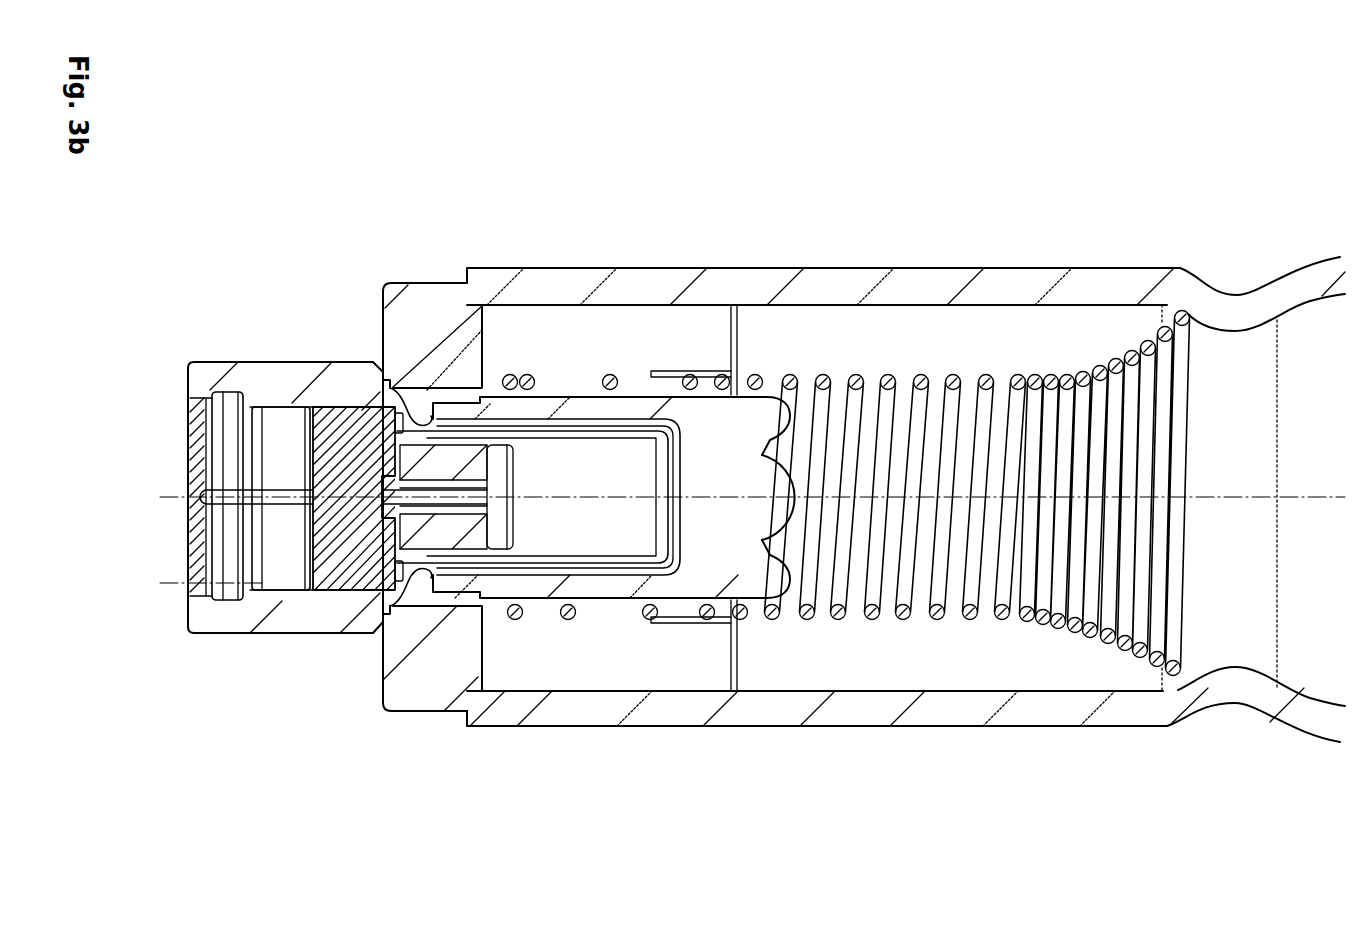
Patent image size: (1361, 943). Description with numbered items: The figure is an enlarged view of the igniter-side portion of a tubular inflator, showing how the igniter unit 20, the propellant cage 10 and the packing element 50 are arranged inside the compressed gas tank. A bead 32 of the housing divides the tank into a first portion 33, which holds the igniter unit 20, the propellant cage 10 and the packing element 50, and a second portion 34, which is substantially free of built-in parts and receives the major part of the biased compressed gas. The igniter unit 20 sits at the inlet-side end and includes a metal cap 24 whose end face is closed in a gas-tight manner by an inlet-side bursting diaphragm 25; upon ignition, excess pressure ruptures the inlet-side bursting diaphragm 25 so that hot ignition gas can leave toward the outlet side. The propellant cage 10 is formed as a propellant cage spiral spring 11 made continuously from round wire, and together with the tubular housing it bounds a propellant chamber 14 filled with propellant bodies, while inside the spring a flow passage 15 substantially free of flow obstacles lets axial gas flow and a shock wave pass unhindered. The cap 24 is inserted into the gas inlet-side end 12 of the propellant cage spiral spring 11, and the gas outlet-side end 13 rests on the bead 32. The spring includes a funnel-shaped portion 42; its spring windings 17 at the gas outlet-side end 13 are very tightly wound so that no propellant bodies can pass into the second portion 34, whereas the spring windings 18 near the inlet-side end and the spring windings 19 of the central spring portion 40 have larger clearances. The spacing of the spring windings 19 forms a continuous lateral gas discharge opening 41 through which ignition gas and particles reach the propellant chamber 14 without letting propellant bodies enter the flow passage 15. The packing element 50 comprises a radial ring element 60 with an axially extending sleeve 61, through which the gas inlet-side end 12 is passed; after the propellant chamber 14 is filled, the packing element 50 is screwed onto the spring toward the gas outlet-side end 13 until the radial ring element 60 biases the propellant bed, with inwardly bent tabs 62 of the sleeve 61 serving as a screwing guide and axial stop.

The propellant cage 10 is at (872, 463).
The propellant cage spiral spring 11 is at (860, 365).
The gas inlet-side end 12 is at (511, 377).
The gas outlet-side end 13 is at (1182, 668).
The propellant chamber 14 is at (1000, 667).
The flow passage 15 is at (1095, 477).
The spring windings 17 is at (1170, 318).
The spring windings 18 is at (604, 377).
The spring windings 19 is at (918, 378).
The igniter unit 20 is at (302, 680).
The cap 24 is at (594, 600).
The inlet-side bursting diaphragm 25 is at (763, 470).
The bead 32 is at (1207, 326).
The first portion 33 is at (515, 675).
The second portion 34 is at (1320, 672).
The central spring portion 40 is at (940, 368).
The lateral gas discharge opening 41 is at (885, 620).
The funnel-shaped portion 42 is at (1104, 335).
The packing element 50 is at (710, 335).
The radial ring element 60 is at (740, 339).
The axially extending sleeve 61 is at (662, 370).
The tabs 62 is at (738, 380).